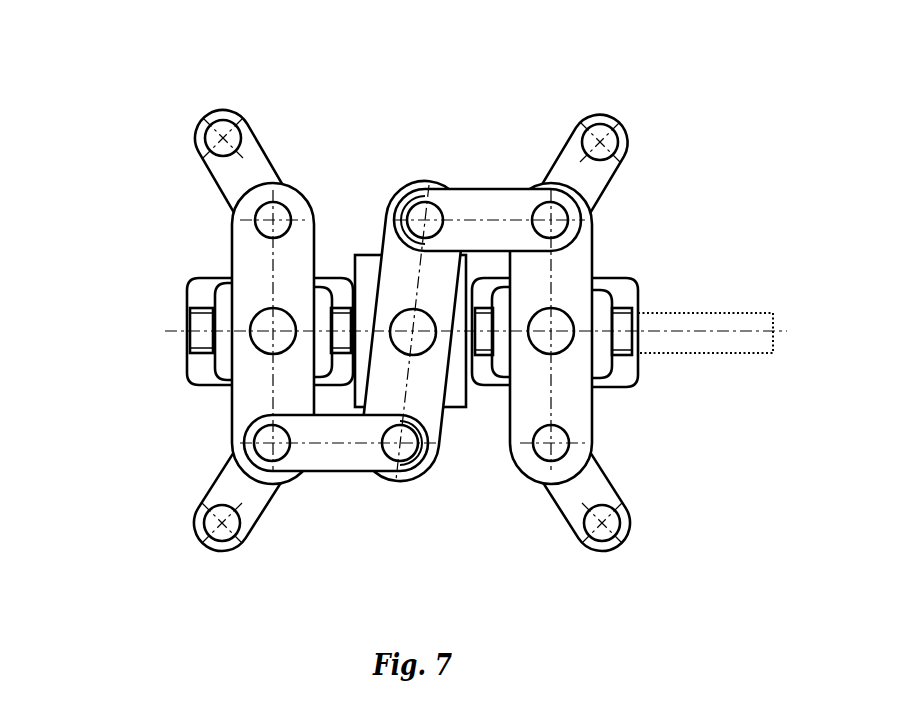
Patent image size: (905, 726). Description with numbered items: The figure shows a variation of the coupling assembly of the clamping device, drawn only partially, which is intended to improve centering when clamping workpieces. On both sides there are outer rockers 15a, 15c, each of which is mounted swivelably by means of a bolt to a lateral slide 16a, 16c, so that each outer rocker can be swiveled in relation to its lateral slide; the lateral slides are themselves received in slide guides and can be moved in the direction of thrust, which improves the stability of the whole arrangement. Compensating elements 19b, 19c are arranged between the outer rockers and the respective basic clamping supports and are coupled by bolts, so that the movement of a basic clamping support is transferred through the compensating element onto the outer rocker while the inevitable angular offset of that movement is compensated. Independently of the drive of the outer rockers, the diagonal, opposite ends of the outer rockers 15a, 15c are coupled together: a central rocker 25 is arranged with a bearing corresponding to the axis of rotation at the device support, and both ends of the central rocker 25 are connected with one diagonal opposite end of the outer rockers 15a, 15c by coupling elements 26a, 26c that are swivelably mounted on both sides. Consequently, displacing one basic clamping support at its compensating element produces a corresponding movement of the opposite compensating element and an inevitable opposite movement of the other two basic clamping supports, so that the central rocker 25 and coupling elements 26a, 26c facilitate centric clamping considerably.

The outer rocker 15a is at (573, 275).
The outer rocker 15c is at (258, 266).
The lateral slide 16a is at (597, 360).
The lateral slide 16c is at (223, 300).
The compensating element 19b is at (558, 495).
The compensating element 19c is at (227, 483).
The central rocker 25 is at (398, 273).
The coupling element 26a is at (483, 218).
The coupling element 26c is at (342, 452).